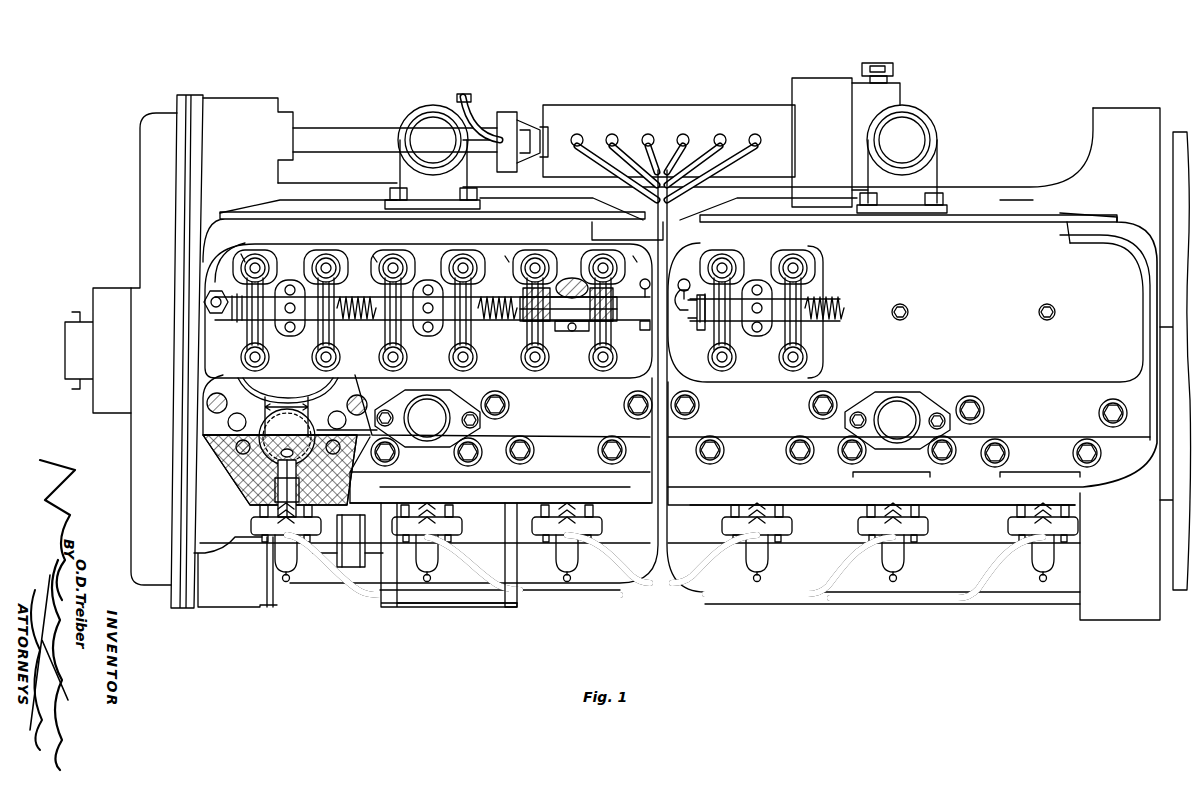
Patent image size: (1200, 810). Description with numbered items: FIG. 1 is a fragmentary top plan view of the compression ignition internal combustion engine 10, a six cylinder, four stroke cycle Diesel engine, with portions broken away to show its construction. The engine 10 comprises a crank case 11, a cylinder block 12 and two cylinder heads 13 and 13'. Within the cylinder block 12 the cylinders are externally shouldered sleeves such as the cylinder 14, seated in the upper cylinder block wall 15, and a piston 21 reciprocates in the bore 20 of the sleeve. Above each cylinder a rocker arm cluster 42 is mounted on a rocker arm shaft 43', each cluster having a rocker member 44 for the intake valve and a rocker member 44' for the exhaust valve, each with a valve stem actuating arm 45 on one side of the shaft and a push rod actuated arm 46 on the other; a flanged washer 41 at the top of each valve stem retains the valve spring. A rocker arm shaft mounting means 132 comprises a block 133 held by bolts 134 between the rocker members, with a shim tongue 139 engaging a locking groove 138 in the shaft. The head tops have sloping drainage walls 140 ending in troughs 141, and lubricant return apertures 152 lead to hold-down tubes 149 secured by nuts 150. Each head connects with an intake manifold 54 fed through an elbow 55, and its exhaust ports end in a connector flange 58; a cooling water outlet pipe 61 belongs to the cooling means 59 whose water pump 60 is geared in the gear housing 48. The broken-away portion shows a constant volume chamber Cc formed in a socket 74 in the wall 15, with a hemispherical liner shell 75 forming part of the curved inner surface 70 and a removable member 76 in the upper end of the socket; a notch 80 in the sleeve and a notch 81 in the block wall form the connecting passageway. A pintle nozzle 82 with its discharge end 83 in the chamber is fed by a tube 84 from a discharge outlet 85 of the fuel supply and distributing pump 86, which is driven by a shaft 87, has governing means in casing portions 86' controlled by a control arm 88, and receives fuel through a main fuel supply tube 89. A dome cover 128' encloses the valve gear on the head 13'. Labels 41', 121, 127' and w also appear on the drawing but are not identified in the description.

The compression ignition internal combustion engine 10 is at (212, 608).
The crank case 11 is at (692, 557).
The cylinder block 12 is at (1125, 228).
The cylinder head 13 is at (427, 439).
The cylinder head 13' is at (909, 443).
The cylinder 14 is at (240, 385).
The upper cylinder block wall 15 is at (357, 395).
The bore 20 is at (330, 408).
The piston 21 is at (292, 387).
The flanged washer 41 is at (429, 311).
The rocker arm (right head) 41' is at (757, 312).
The rocker arm cluster 42 is at (264, 300).
The rocker arm shaft 43' is at (693, 322).
The rocker member 44 is at (465, 345).
The rocker member 44' is at (666, 327).
The valve stem actuating arm 45 is at (405, 355).
The push rod actuated arm 46 is at (523, 299).
The gear housing 48 is at (148, 237).
The intake manifold 54 is at (660, 231).
The elbow 55 is at (666, 159).
The connector flange 58 is at (455, 477).
The cooling means 59 is at (453, 607).
The water pump 60 is at (493, 607).
The cooling water outlet pipe 61 is at (428, 442).
The curved inner surface 70 is at (279, 448).
The socket 74 is at (312, 467).
The removable liner shell 75 is at (332, 478).
The removable member 76 is at (290, 463).
The notch 80 is at (266, 387).
The notch 81 is at (287, 423).
The pintle nozzle 82 is at (293, 555).
The discharge end 83 is at (282, 472).
The tube 84 is at (580, 592).
The discharge outlet 85 is at (645, 128).
The fuel supply and distributing pump 86 is at (669, 126).
The casing portions 86' is at (846, 128).
The shaft 87 is at (356, 140).
The control arm 88 is at (892, 65).
The main fuel supply tube 89 is at (468, 100).
The retaining pin 121 is at (643, 282).
The shaft end clip 127' is at (689, 267).
The cover 128' is at (973, 318).
The rocker arm shaft mounting means 132 is at (300, 262).
The block 133 is at (305, 330).
The bolts 134 is at (248, 350).
The locking grooves 138 is at (568, 290).
The shim tongue 139 is at (572, 338).
The drainage walls 140 is at (538, 300).
The troughs 141 is at (243, 252).
The upper sealing lubricant return and cylinder head hold-down tube 149 is at (455, 255).
The nut 150 is at (493, 253).
The lubricant return aperture 152 is at (235, 270).
The bore width w is at (281, 431).
The constant volume chamber Cc is at (303, 447).